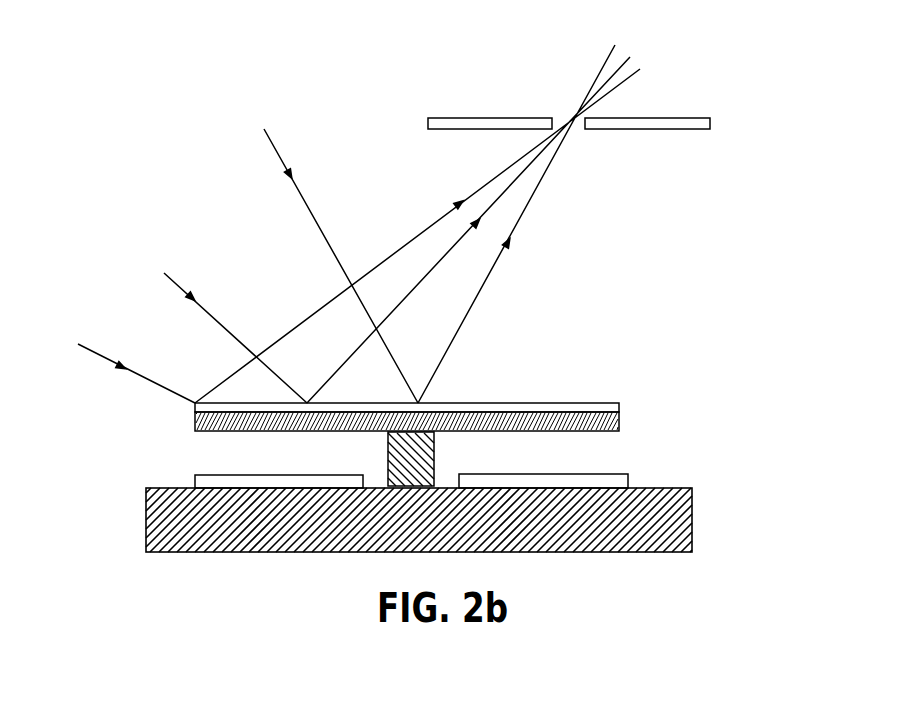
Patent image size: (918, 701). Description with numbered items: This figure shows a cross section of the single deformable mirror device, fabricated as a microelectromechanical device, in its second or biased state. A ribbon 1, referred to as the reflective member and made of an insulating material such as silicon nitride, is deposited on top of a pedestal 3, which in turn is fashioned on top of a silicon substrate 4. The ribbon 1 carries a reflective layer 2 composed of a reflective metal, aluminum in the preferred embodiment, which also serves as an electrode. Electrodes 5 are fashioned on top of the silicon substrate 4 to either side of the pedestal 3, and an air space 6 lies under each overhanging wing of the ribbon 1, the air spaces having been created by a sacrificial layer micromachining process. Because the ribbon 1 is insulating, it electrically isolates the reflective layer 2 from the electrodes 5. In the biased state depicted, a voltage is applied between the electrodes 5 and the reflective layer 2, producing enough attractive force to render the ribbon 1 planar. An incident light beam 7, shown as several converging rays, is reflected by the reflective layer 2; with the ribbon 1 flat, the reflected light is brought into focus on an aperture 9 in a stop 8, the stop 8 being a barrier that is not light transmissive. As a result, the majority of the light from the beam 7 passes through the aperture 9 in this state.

The ribbon 1 is at (620, 418).
The reflective layer 2 is at (550, 403).
The pedestal 3 is at (423, 448).
The silicon substrate 4 is at (168, 535).
The electrodes 5 is at (205, 475).
The air space 6 is at (282, 464).
The incident light beam 7 is at (280, 155).
The stop 8 is at (458, 118).
The aperture 9 is at (563, 117).